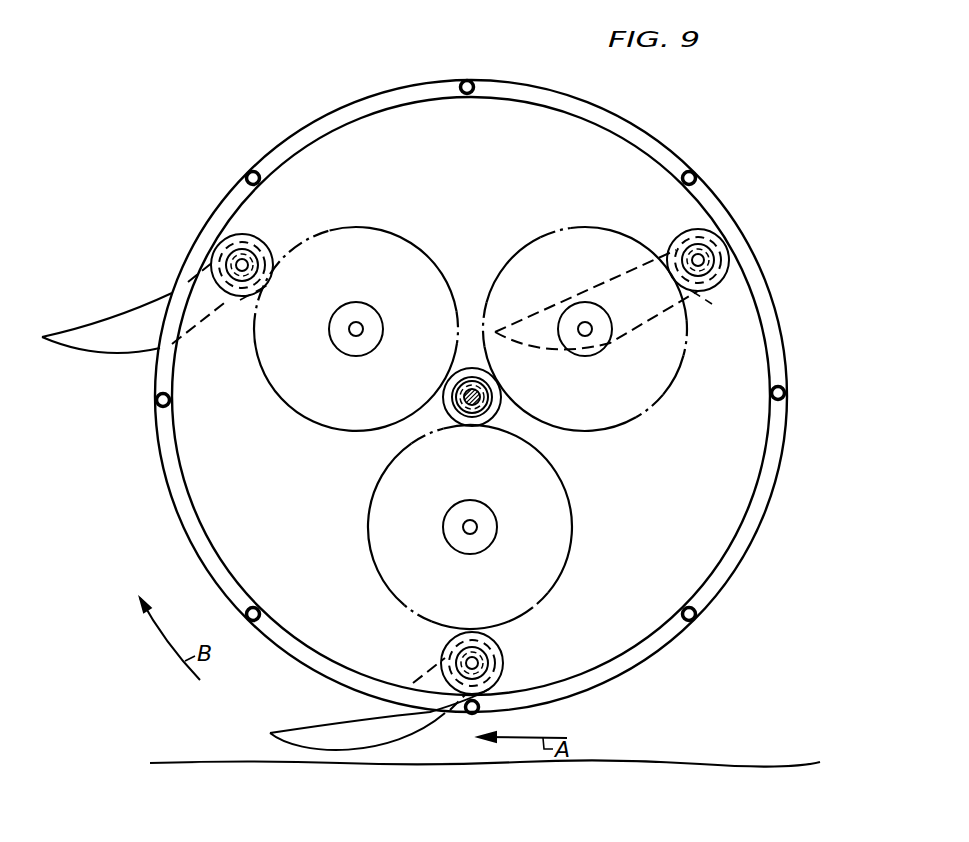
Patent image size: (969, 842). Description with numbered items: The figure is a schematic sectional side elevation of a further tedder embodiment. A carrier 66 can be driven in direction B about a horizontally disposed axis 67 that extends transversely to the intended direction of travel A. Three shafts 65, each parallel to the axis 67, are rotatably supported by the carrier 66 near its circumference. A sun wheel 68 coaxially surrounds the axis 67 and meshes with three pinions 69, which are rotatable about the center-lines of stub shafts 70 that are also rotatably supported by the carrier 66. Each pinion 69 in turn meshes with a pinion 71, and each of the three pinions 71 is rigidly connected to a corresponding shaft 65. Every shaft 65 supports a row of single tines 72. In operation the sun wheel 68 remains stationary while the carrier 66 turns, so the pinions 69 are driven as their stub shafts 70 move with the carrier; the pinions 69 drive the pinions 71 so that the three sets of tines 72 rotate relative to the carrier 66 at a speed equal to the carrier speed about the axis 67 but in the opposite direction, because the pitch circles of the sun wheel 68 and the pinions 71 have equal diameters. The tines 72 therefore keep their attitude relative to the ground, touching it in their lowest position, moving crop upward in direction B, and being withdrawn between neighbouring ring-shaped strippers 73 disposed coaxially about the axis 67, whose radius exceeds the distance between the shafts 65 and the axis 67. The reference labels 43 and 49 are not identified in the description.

The drive roller 43 is at (402, 718).
The ground engaging belt 49 is at (290, 746).
The shaft 65 is at (244, 259).
The carrier 66 is at (349, 99).
The axis 67 is at (464, 396).
The sun wheel 68 is at (492, 424).
The pinion 69 is at (390, 468).
The stub shaft 70 is at (352, 334).
The pinion 71 is at (440, 658).
The tine 72 is at (100, 330).
The stripper 73 is at (642, 662).